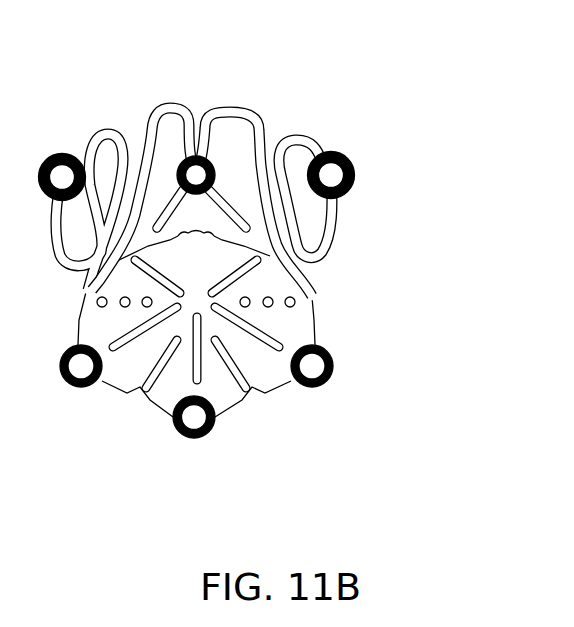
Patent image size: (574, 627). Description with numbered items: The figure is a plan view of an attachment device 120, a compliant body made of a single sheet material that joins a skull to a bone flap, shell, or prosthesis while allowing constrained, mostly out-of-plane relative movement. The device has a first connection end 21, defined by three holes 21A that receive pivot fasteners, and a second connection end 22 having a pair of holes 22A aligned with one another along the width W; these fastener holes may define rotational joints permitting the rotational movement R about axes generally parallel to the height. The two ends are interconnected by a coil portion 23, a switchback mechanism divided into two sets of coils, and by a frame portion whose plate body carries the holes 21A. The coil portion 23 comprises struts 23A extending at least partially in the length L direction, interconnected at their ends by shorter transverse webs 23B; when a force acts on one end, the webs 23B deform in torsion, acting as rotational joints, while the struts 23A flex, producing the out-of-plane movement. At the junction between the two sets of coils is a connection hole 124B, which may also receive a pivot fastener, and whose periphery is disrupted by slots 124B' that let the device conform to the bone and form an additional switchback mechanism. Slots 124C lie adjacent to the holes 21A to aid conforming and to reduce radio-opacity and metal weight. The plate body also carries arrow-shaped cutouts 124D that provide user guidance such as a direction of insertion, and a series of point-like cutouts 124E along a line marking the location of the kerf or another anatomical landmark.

The attachment device 120 is at (232, 249).
The first connection end 21 is at (209, 367).
The holes 21A is at (84, 387).
The second connection end 22 is at (246, 140).
The holes 22A is at (348, 184).
The coil portion 23 is at (207, 90).
The struts 23A is at (147, 130).
The webs 23B is at (287, 137).
The connection hole 124B is at (187, 194).
The slots 124B' is at (214, 154).
The slots 124C is at (143, 394).
The cutouts 124D is at (183, 250).
The cutouts 124E is at (296, 302).
The rotational movement R is at (95, 172).
The length L is at (8, 545).
The width W is at (8, 545).